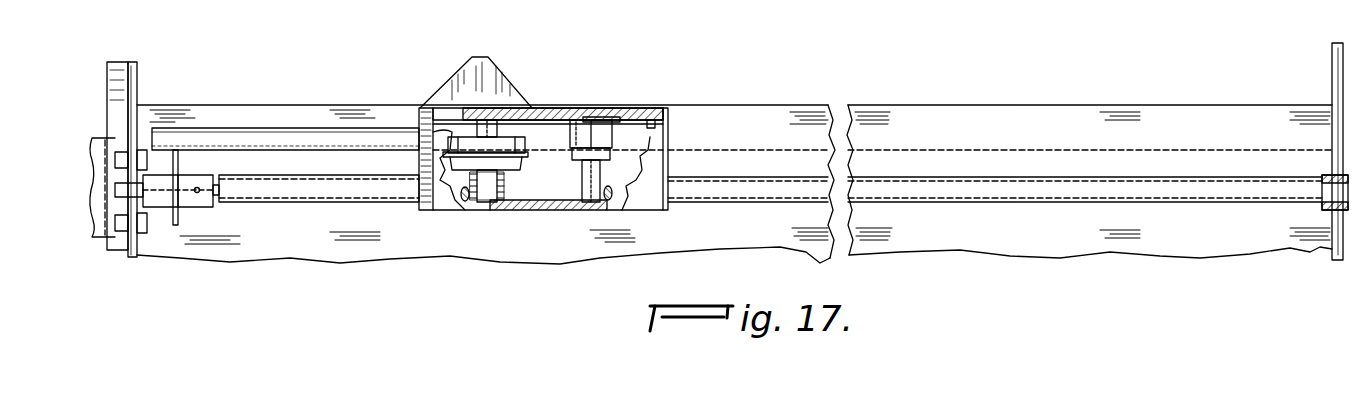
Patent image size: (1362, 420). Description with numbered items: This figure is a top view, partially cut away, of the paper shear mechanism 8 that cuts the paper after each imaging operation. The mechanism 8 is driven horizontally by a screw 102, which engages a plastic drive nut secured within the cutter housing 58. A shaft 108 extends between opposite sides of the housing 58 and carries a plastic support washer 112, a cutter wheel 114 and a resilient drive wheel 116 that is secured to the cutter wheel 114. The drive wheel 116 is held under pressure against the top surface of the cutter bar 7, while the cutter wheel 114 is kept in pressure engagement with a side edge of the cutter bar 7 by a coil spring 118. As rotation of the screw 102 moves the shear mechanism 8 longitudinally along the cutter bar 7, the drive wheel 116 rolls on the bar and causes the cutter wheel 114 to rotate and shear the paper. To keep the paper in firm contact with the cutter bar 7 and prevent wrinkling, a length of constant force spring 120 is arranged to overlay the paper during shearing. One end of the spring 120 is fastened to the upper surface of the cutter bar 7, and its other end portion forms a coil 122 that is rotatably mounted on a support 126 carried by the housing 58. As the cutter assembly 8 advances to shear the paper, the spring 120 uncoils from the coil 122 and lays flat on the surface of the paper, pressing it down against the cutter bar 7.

The cutter bar 7 is at (283, 151).
The paper shear mechanism 8 is at (543, 119).
The cutter housing 58 is at (567, 108).
The screw 102 is at (318, 203).
The shaft 108 is at (477, 125).
The support washer 112 is at (513, 160).
The cutter wheel 114 is at (440, 155).
The drive wheel 116 is at (460, 132).
The coil spring 118 is at (475, 203).
The constant force spring 120 is at (292, 128).
The coil 122 is at (638, 110).
The support 126 is at (587, 205).